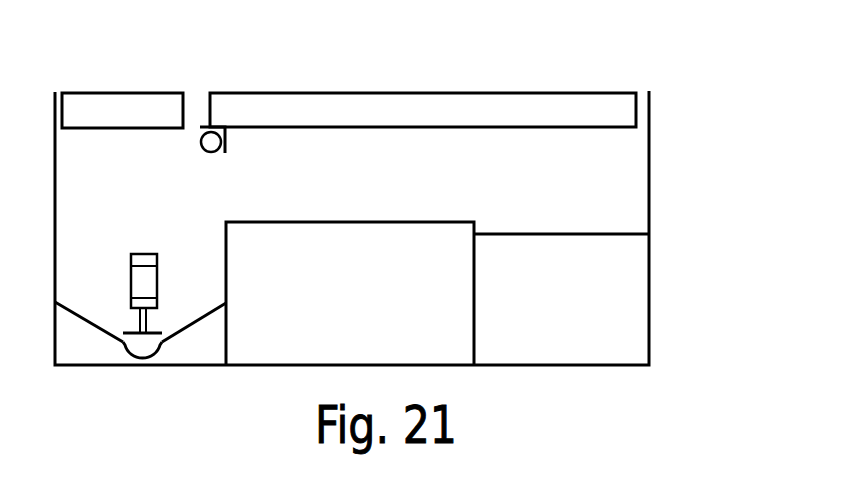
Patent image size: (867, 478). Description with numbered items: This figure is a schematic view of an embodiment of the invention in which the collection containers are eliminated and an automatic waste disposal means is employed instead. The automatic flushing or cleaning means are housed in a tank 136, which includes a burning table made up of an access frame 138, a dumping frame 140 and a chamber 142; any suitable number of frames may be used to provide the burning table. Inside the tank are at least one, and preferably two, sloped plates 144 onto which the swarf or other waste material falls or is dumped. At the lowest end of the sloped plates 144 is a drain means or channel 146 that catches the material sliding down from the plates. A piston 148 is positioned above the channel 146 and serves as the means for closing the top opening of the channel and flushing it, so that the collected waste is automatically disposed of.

The tank 136 is at (652, 294).
The access frame 138 is at (134, 91).
The dumping frame 140 is at (412, 91).
The chamber 142 is at (456, 220).
The sloped plate 144 is at (190, 332).
The drain means or channel 146 is at (129, 357).
The piston 148 is at (135, 251).